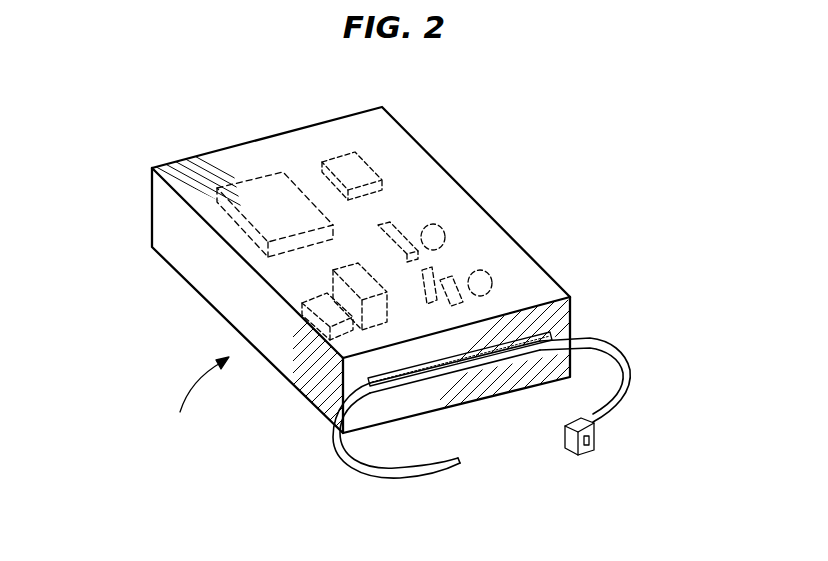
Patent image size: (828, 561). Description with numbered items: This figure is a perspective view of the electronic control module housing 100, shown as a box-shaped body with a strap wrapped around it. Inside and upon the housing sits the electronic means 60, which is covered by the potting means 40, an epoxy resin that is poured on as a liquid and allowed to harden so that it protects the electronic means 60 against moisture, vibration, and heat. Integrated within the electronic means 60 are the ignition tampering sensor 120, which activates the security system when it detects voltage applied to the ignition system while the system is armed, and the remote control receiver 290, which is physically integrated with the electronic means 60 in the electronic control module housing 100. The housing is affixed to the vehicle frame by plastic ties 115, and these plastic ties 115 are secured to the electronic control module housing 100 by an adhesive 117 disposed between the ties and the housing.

The electronic control module housing 100 is at (252, 305).
The potting means 40 is at (442, 200).
The remote control receiver 290 is at (262, 190).
The ignition tampering sensor 120 is at (358, 172).
The electronic means 60 is at (350, 302).
The adhesive 117 is at (555, 321).
The plastic ties 115 is at (592, 447).